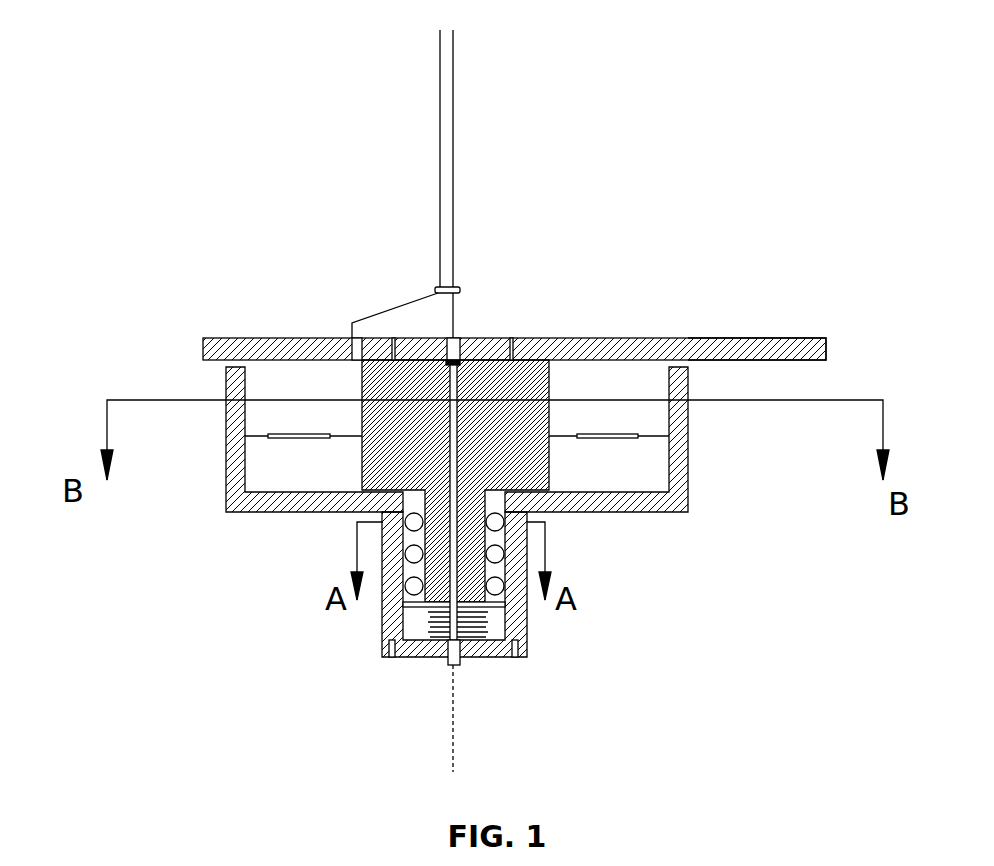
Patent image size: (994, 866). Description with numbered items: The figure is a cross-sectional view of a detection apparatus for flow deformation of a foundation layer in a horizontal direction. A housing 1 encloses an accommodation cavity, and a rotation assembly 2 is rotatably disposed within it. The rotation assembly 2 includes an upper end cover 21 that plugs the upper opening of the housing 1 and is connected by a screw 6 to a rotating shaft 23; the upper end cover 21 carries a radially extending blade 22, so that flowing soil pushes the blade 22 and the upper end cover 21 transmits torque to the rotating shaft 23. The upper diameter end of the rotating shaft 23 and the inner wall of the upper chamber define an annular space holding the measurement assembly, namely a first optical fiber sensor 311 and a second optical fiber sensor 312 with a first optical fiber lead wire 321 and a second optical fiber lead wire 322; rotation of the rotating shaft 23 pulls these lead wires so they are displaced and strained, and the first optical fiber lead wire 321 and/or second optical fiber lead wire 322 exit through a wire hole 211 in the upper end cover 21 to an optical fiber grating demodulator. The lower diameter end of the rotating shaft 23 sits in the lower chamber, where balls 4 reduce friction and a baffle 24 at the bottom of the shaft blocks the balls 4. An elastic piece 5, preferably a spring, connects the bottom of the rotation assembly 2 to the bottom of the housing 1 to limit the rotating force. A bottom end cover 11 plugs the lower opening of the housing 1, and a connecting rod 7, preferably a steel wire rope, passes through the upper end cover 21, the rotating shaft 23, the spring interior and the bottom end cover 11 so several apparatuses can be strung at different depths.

The housing 1 is at (688, 485).
The rotation assembly 2 is at (523, 362).
The upper end cover 21 is at (618, 338).
The blade 22 is at (768, 338).
The rotating shaft 23 is at (489, 419).
The baffle 24 is at (528, 612).
The wire hole 211 is at (350, 338).
The first optical fiber sensor 311 is at (300, 438).
The second optical fiber sensor 312 is at (608, 438).
The first optical fiber lead wire 321 is at (260, 437).
The second optical fiber lead wire 322 is at (560, 438).
The ball 4 is at (383, 566).
The elastic piece 5 is at (440, 657).
The screw 6 is at (392, 338).
The connecting rod 7 is at (455, 67).
The bottom end cover 11 is at (475, 657).